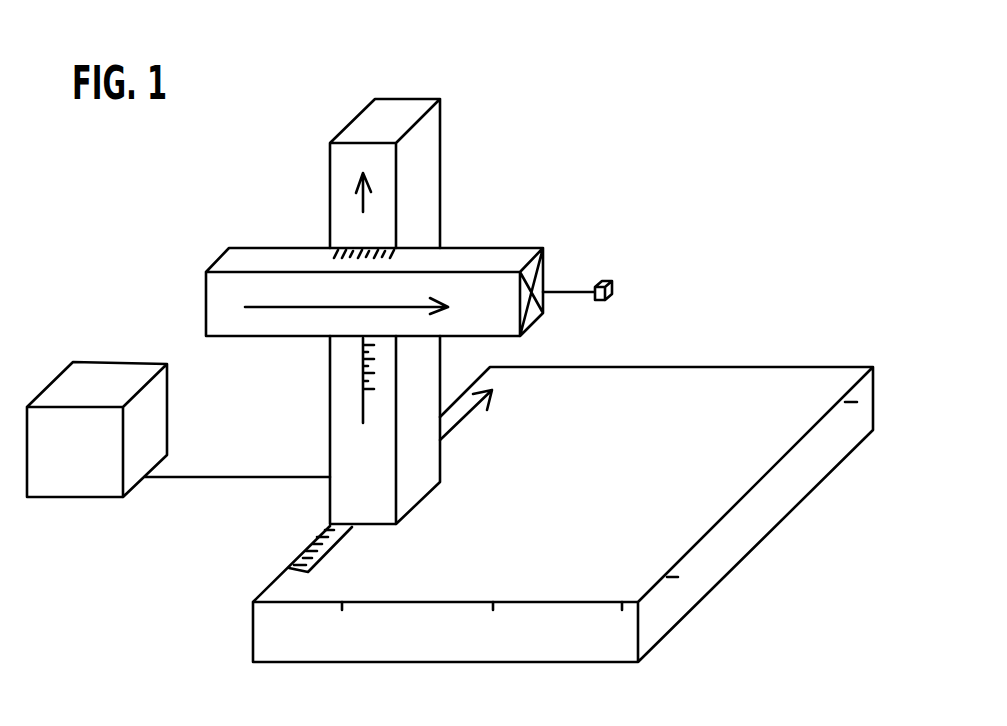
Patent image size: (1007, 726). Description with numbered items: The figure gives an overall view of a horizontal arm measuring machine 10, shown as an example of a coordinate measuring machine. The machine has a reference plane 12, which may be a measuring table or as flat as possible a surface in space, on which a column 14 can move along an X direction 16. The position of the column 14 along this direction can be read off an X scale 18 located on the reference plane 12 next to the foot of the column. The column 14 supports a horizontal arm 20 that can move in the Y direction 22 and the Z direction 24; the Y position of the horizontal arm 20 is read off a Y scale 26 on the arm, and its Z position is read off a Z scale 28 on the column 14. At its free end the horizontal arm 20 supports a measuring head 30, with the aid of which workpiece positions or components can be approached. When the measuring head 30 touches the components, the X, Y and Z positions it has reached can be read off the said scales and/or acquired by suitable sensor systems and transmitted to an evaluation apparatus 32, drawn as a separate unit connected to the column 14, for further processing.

The horizontal arm measuring machine 10 is at (660, 188).
The reference plane 12 is at (792, 385).
The column 14 is at (441, 177).
The X direction 16 is at (470, 417).
The X scale 18 is at (305, 552).
The horizontal arm 20 is at (490, 247).
The Y direction 22 is at (402, 300).
The Z direction 24 is at (372, 212).
The Y scale 26 is at (347, 253).
The Z scale 28 is at (377, 372).
The measuring head 30 is at (612, 287).
The evaluation apparatus 32 is at (73, 497).